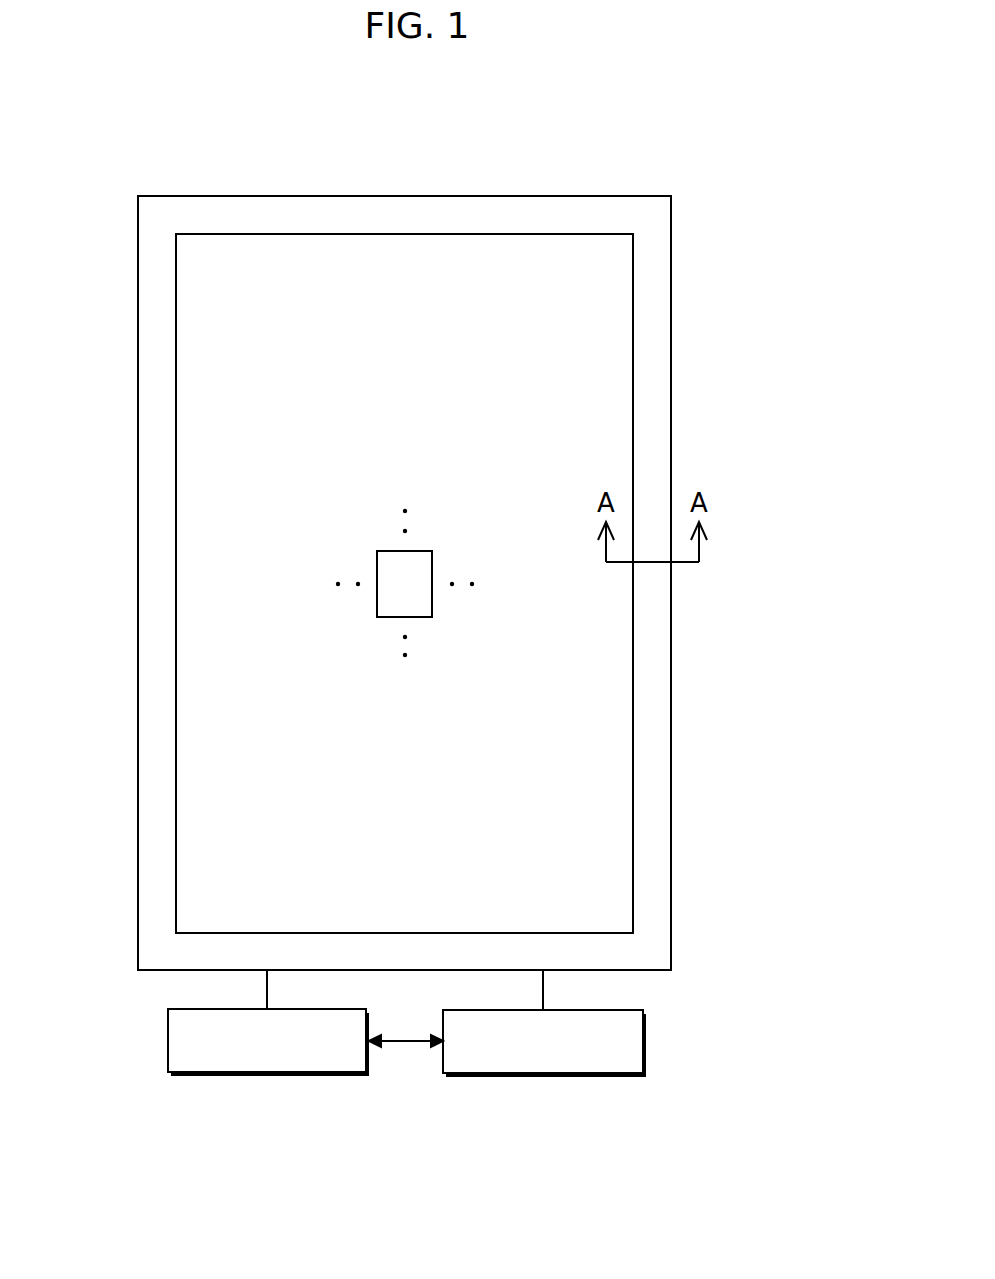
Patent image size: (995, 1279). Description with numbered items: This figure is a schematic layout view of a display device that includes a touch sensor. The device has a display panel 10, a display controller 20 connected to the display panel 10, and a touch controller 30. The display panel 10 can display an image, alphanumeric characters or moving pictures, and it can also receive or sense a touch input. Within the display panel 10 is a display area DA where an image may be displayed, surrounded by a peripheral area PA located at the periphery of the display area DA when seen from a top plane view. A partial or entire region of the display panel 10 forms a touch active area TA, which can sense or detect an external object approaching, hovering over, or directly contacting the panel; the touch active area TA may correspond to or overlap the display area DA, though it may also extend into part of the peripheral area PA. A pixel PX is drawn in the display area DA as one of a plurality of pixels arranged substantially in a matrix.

The display panel 10 is at (671, 330).
The display controller 20 is at (648, 1044).
The touch controller 30 is at (168, 1044).
The pixel PX is at (405, 583).
The display area DA is at (332, 583).
The touch active area TA is at (205, 301).
The peripheral area PA is at (158, 366).